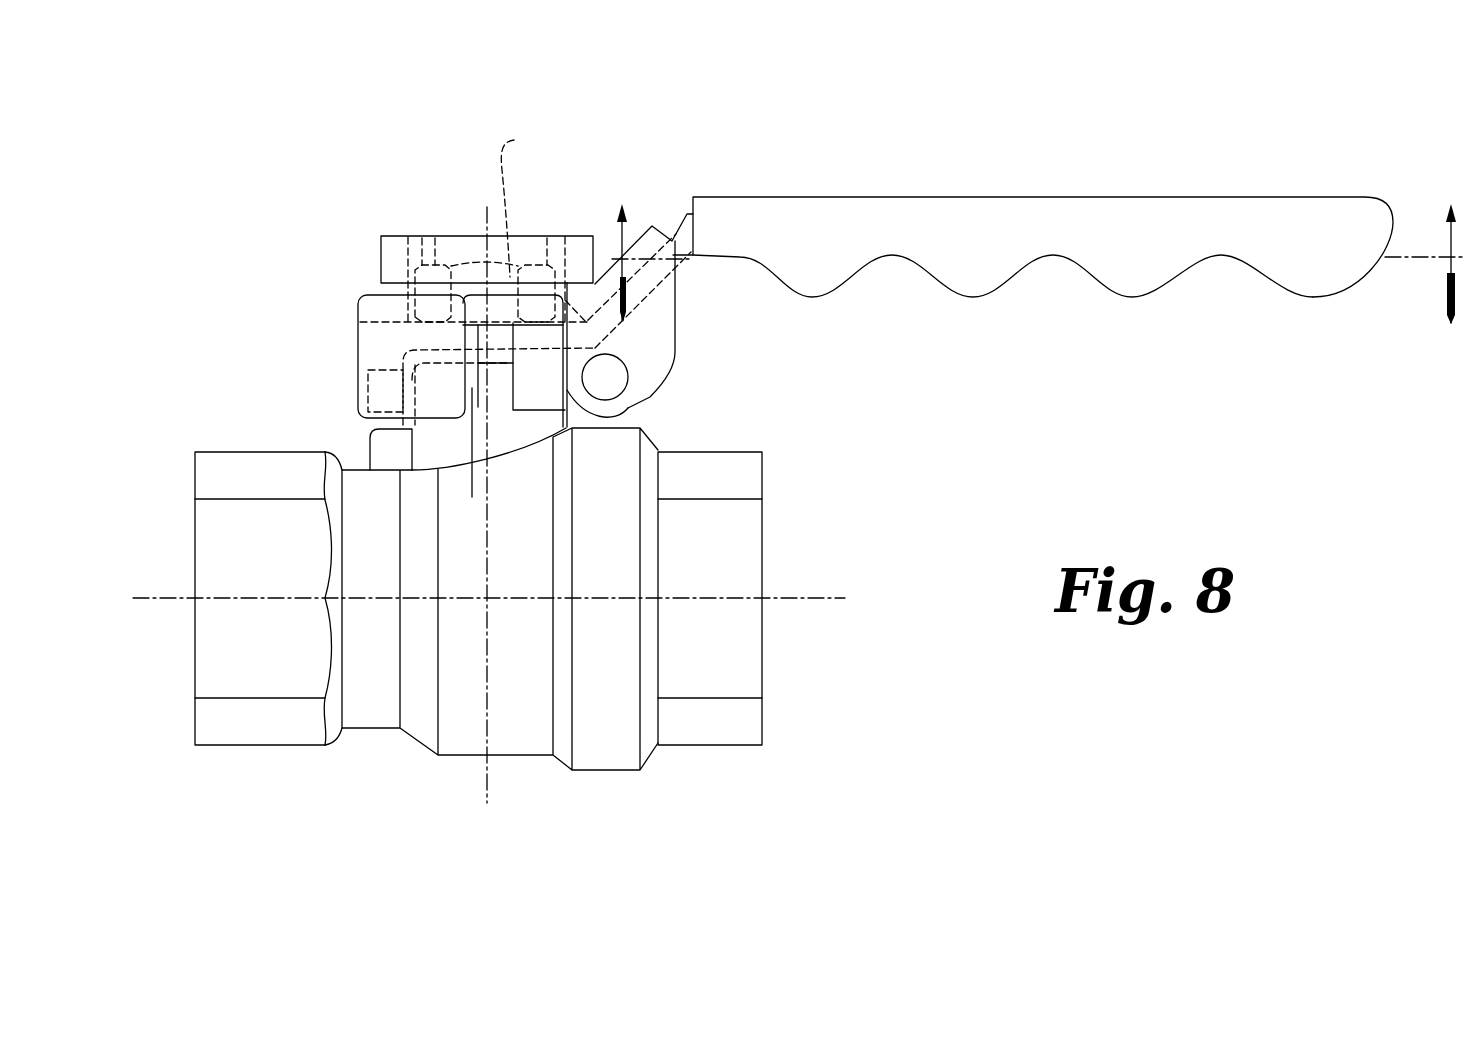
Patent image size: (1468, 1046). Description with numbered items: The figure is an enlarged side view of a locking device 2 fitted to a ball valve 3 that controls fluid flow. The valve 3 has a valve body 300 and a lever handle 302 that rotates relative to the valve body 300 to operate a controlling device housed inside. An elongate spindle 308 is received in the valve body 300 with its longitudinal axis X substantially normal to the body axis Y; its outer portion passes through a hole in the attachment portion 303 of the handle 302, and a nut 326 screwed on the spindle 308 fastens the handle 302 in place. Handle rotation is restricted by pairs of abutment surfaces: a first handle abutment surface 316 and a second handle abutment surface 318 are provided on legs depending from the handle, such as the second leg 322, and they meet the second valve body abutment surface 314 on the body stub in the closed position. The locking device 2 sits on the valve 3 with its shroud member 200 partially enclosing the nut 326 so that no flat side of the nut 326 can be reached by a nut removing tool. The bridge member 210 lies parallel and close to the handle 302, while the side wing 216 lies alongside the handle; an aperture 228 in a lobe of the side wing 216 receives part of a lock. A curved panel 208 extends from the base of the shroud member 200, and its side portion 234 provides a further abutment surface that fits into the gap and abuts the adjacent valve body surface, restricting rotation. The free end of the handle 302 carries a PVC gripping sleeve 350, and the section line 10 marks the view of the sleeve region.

The locking device 2 is at (384, 158).
The ball valve 3 is at (260, 806).
The section line 10 is at (1037, 250).
The shroud member 200 is at (596, 254).
The curved panel 208 is at (440, 383).
The bridge member 210 is at (653, 226).
The side wing 216 is at (650, 338).
The aperture 228 is at (610, 370).
The side portion of curved panel 234 is at (472, 497).
The valve body 300 is at (425, 745).
The lever handle 302 is at (948, 178).
The attachment portion 303 is at (450, 336).
The spindle 308 is at (527, 243).
The second valve body abutment surface 314 is at (383, 437).
The first handle abutment surface 316 is at (390, 390).
The second handle abutment surface 318 is at (518, 400).
The second leg 322 is at (540, 393).
The nut 326 is at (529, 203).
The gripping sleeve 350 is at (823, 263).